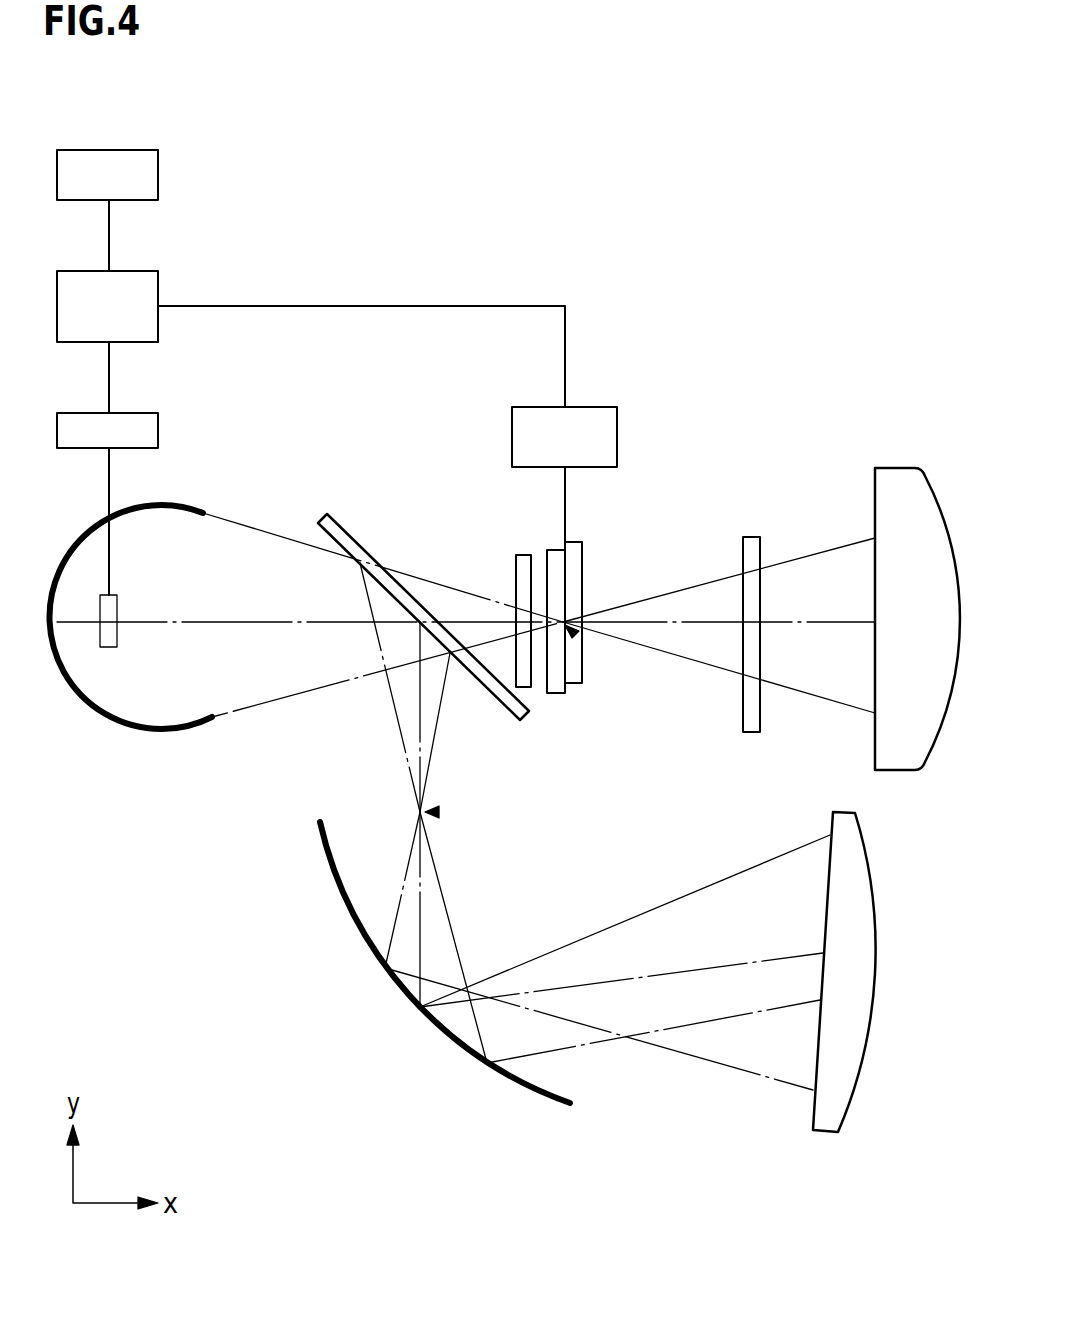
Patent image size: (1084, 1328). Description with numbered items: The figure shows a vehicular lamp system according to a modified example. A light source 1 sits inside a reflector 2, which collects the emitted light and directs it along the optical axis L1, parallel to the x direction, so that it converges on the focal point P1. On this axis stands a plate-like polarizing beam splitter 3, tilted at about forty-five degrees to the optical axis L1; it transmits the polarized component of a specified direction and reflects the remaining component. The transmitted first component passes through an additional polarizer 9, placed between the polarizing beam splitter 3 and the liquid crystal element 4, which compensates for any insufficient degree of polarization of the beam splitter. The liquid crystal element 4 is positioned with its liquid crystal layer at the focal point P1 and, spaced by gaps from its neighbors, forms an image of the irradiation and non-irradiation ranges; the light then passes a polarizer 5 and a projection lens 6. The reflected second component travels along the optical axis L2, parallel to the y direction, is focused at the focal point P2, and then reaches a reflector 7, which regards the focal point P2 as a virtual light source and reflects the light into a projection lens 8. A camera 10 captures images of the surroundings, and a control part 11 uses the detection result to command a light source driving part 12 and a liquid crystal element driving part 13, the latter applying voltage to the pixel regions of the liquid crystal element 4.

The light source 1 is at (109, 647).
The reflector 2 is at (177, 730).
The polarizing beam splitter 3 is at (326, 512).
The liquid crystal element 4 is at (568, 546).
The polarizer 5 is at (751, 537).
The projection lens 6 is at (897, 468).
The reflector 7 is at (527, 1090).
The projection lens 8 is at (822, 1133).
The polarizer 9 is at (525, 555).
The camera 10 is at (148, 150).
The control part 11 is at (148, 271).
The light source driving part 12 is at (148, 413).
The liquid crystal element driving part 13 is at (597, 407).
The optical axis L1 is at (282, 622).
The optical axis L2 is at (422, 708).
The focal point P1 is at (576, 635).
The focal point P2 is at (438, 812).